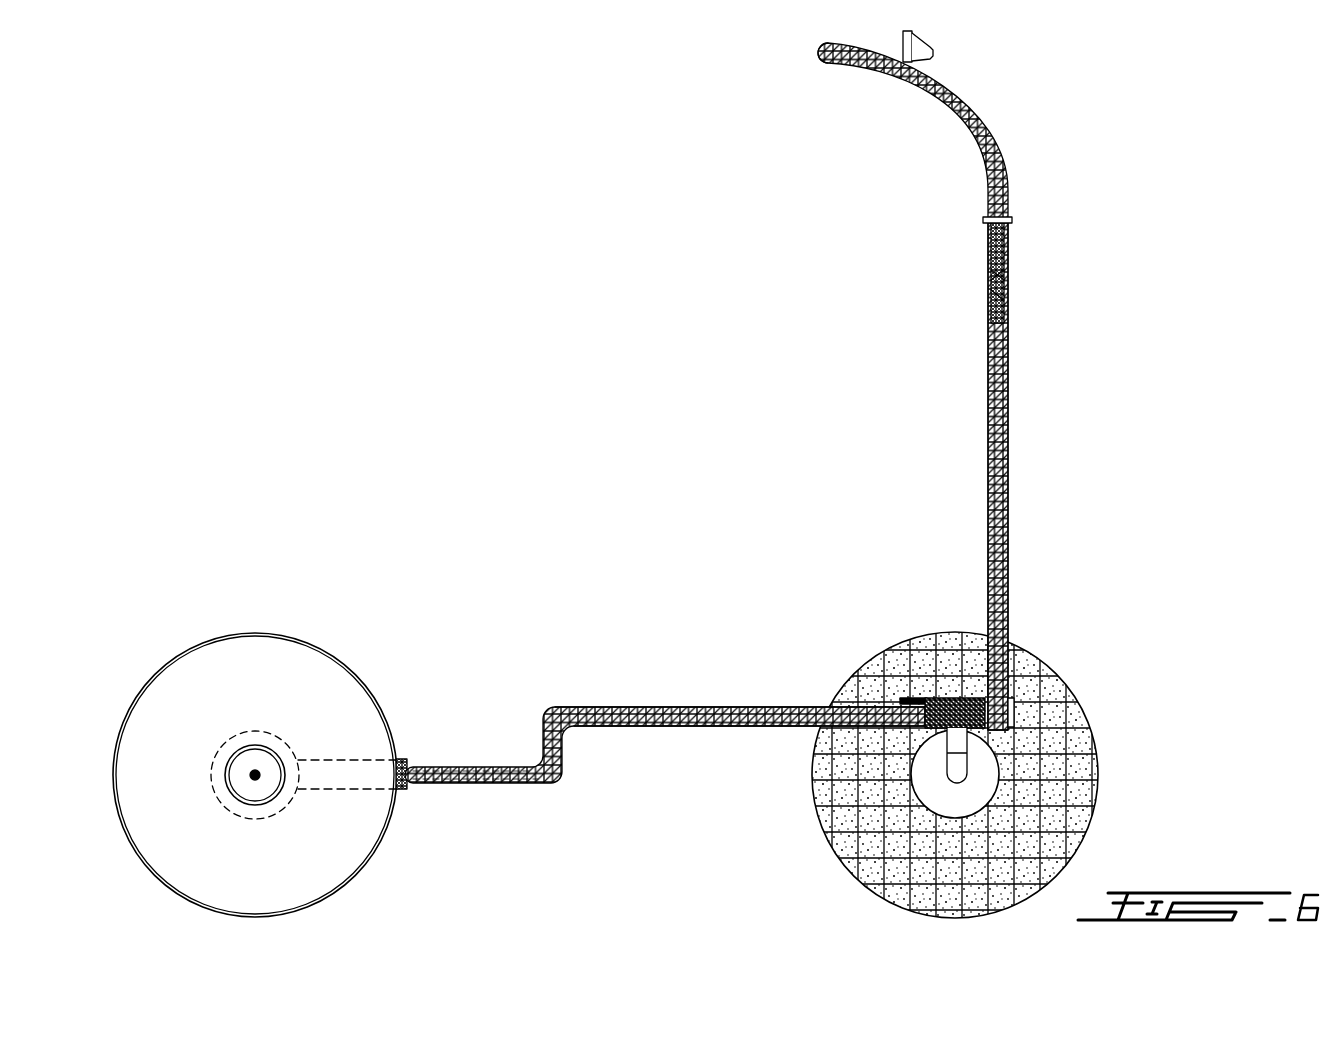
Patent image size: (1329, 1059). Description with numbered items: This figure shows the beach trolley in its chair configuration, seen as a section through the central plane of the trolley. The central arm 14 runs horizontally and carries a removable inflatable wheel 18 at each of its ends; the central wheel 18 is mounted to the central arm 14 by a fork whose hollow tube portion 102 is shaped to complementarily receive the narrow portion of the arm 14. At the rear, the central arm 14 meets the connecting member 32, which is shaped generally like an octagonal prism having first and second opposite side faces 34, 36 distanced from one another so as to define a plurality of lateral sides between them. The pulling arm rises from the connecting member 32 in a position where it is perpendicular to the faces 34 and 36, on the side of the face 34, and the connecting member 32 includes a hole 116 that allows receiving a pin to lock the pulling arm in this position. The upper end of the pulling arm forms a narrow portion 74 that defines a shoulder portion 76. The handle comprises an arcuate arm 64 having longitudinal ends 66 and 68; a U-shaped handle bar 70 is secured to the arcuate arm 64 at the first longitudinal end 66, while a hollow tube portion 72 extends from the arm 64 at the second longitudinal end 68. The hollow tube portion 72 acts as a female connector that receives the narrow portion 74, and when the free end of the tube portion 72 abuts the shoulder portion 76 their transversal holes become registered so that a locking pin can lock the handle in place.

The central arm 14 is at (652, 728).
The removable inflatable wheel 18 is at (1090, 711).
The connecting member 32 is at (973, 737).
The first side face 34 is at (930, 698).
The second side face 36 is at (940, 733).
The arcuate arm 64 is at (993, 140).
The first longitudinal end 66 is at (893, 46).
The second longitudinal end 68 is at (1012, 219).
The U-shaped handle bar 70 is at (935, 52).
The hollow tube portion 72 is at (1007, 265).
The narrow portion 74 is at (1007, 288).
The shoulder portion 76 is at (988, 312).
The hollow tube portion 102 is at (485, 757).
The hole 116 is at (994, 706).